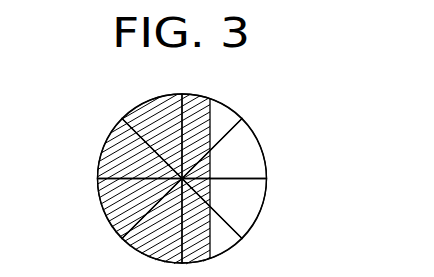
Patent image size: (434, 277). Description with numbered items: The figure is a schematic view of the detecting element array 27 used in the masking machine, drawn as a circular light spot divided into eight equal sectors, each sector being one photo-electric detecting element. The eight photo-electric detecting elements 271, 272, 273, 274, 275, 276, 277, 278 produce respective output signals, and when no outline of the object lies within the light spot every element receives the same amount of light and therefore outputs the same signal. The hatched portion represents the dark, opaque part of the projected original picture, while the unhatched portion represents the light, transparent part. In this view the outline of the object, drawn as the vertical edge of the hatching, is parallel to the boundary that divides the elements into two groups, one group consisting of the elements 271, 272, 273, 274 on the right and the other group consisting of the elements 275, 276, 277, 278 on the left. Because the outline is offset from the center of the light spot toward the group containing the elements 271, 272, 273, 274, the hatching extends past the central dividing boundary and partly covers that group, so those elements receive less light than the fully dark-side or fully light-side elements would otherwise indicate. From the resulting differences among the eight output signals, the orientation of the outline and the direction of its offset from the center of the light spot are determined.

The detecting element array 27 is at (262, 123).
The photo-electric detecting element 271 is at (241, 120).
The photo-electric detecting element 272 is at (264, 150).
The photo-electric detecting element 273 is at (263, 208).
The photo-electric detecting element 274 is at (247, 247).
The photo-electric detecting element 275 is at (133, 248).
The photo-electric detecting element 276 is at (100, 198).
The photo-electric detecting element 277 is at (100, 156).
The photo-electric detecting element 278 is at (152, 103).